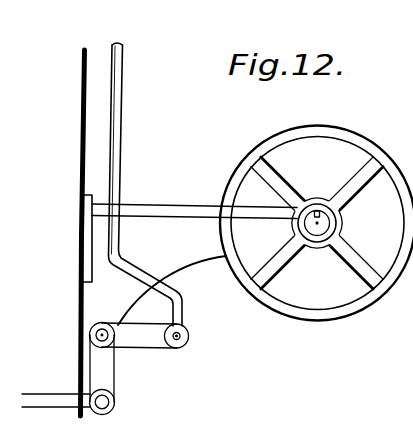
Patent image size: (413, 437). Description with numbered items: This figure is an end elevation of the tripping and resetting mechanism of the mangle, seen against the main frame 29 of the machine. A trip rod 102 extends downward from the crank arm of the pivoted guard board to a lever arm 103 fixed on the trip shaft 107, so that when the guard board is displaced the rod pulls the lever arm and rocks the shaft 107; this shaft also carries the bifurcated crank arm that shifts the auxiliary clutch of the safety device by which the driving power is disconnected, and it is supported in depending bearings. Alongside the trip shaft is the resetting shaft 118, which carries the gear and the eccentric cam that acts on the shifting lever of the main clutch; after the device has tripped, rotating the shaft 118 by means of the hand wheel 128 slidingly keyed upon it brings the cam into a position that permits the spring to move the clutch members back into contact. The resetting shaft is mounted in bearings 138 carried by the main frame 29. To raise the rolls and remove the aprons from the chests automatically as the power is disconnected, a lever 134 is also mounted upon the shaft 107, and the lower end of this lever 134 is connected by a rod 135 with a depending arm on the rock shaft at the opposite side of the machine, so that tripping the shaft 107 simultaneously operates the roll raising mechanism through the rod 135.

The main frame 29 is at (62, 233).
The trip rod 102 is at (154, 26).
The lever arm 103 is at (117, 188).
The shaft 107 is at (96, 335).
The shaft 118 is at (319, 223).
The wheel 128 is at (330, 117).
The lever 134 is at (114, 362).
The rod 135 is at (37, 394).
The bearings 138 is at (205, 204).